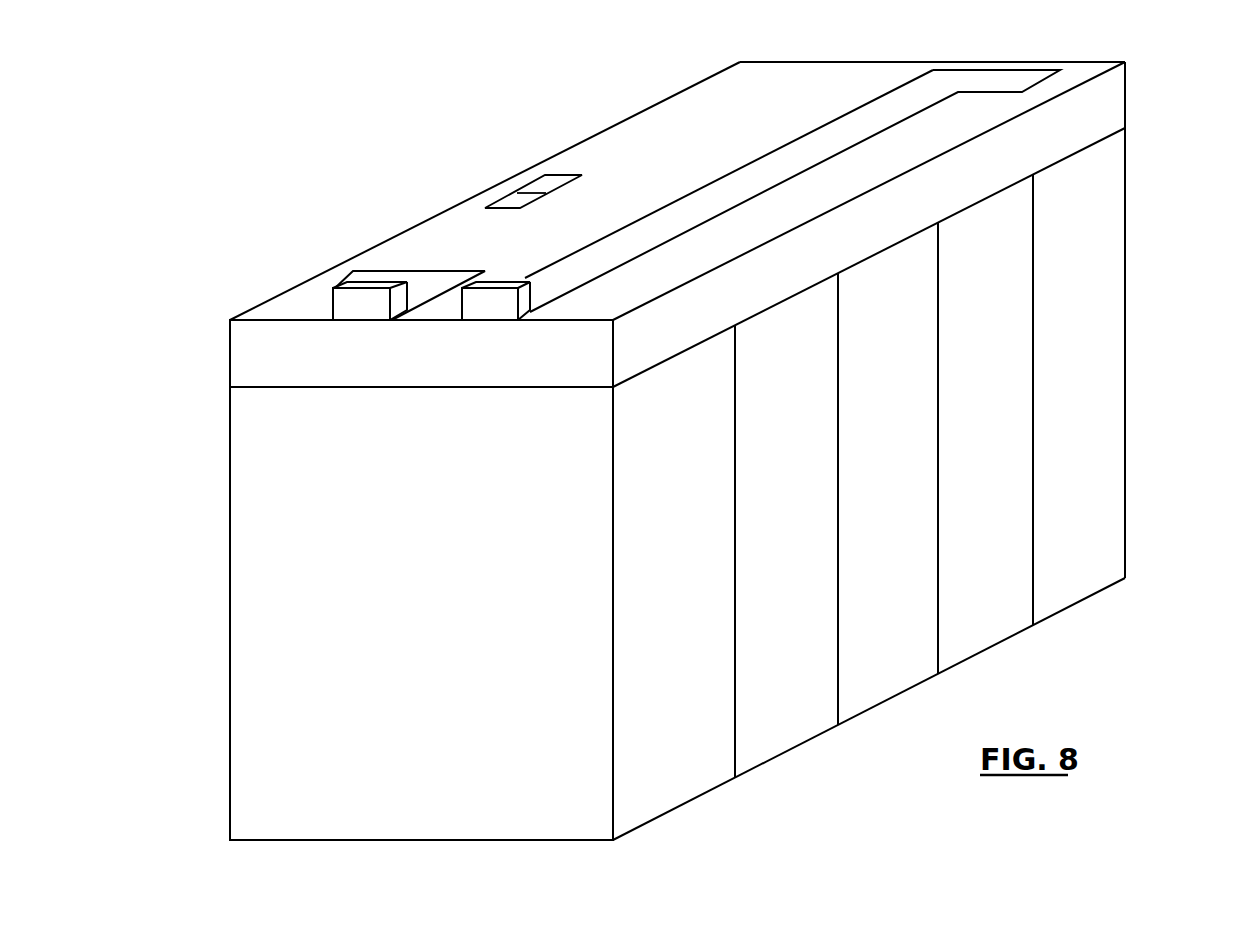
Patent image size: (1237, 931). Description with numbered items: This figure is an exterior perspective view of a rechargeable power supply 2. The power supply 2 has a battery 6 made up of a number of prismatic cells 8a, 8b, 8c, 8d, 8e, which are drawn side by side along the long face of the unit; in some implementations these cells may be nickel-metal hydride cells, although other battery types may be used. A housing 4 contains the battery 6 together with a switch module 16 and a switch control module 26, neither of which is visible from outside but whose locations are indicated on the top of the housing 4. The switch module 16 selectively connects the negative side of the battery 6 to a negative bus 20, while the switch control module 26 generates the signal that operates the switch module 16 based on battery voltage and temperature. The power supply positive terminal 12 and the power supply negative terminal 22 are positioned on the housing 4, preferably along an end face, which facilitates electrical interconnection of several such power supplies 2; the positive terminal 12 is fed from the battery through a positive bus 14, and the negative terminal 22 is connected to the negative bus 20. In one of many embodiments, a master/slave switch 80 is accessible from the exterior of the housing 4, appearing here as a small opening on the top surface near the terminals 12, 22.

The rechargeable power supply 2 is at (255, 67).
The housing 4 is at (674, 158).
The battery 6 is at (1152, 367).
The cell 8a is at (685, 721).
The cell 8b is at (798, 672).
The cell 8c is at (893, 619).
The cell 8d is at (990, 586).
The cell 8e is at (1085, 552).
The power supply positive terminal 12 is at (333, 304).
The positive bus 14 is at (353, 270).
The switch module 16 is at (722, 100).
The negative bus 20 is at (672, 200).
The power supply negative terminal 22 is at (500, 281).
The switch control module 26 is at (622, 142).
The master/slave switch 80 is at (537, 177).